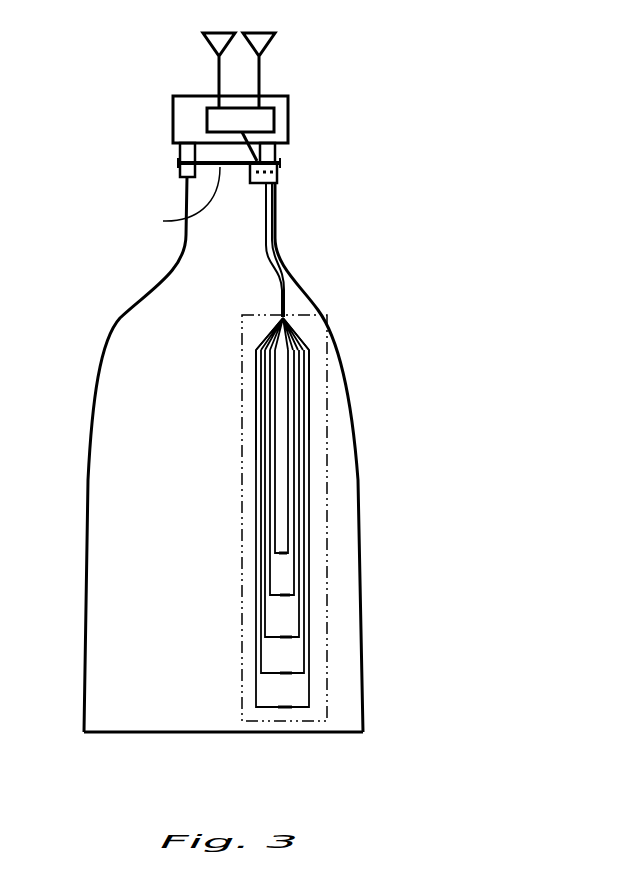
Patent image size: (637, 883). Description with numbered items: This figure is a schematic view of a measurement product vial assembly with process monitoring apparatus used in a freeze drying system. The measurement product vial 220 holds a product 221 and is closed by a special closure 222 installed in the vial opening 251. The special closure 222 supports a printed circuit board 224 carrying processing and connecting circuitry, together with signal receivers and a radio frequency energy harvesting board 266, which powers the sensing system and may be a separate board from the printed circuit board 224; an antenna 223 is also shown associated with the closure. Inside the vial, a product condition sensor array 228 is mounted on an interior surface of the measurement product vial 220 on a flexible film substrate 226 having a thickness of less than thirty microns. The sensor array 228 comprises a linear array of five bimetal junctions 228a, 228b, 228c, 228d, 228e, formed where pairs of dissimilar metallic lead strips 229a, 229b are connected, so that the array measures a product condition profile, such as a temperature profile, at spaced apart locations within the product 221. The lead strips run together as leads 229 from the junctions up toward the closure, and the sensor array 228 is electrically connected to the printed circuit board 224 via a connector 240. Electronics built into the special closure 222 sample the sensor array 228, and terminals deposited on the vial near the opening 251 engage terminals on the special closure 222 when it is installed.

The measurement product vial 220 is at (132, 303).
The product 221 is at (158, 637).
The special closure 222 is at (288, 121).
The antenna 223 is at (273, 40).
The printed circuit board 224 is at (207, 121).
The flexible film substrate 226 is at (241, 517).
The product condition sensor array 228 is at (256, 383).
The bimetal junction 228a is at (285, 707).
The bimetal junction 228b is at (287, 673).
The bimetal junction 228c is at (287, 637).
The bimetal junction 228d is at (288, 595).
The bimetal junction 228e is at (286, 553).
The cable 229 is at (283, 302).
The dissimilar metallic lead strip 229a is at (310, 440).
The dissimilar metallic lead strip 229b is at (256, 462).
The connector 240 is at (278, 172).
The vial opening 251 is at (167, 198).
The radio frequency energy harvesting board 266 is at (210, 40).